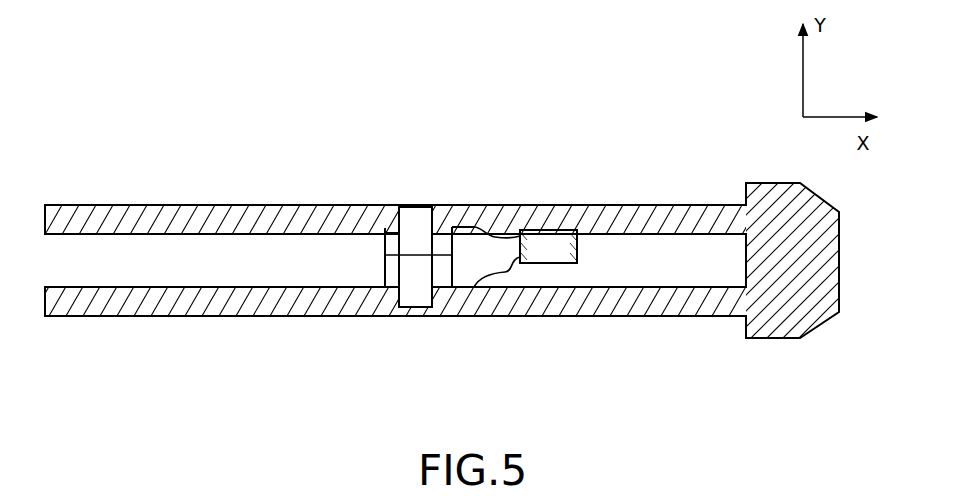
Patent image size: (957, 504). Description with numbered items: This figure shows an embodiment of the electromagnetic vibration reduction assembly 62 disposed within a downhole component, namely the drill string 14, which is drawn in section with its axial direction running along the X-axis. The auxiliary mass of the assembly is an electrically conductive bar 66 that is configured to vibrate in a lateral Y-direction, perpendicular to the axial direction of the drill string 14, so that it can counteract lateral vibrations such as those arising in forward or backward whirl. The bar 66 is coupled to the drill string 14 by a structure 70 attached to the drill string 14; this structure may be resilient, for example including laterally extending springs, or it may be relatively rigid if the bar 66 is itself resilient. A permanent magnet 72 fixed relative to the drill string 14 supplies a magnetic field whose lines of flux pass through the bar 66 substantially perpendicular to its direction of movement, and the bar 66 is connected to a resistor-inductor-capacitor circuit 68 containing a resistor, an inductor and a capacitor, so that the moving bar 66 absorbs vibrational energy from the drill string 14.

The drill string 14 is at (640, 215).
The electromagnetic vibration reduction assembly 62 is at (473, 194).
The electrically conductive bar 66 is at (434, 258).
The RCL circuit 68 is at (548, 230).
The structure 70 is at (382, 246).
The permanent magnet 72 is at (412, 296).